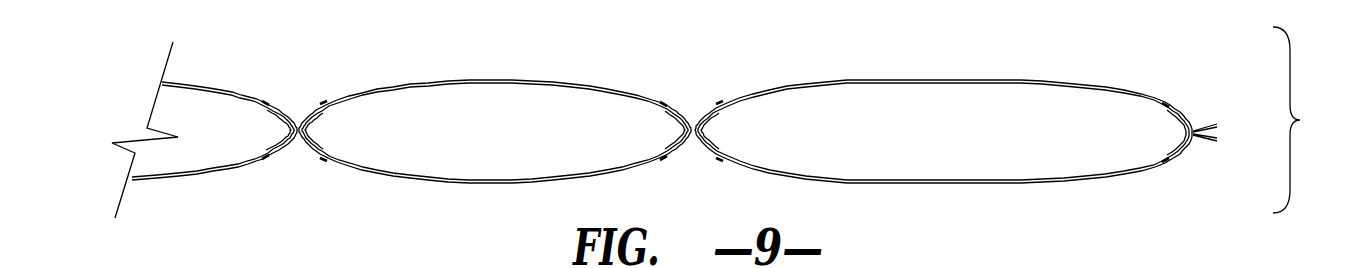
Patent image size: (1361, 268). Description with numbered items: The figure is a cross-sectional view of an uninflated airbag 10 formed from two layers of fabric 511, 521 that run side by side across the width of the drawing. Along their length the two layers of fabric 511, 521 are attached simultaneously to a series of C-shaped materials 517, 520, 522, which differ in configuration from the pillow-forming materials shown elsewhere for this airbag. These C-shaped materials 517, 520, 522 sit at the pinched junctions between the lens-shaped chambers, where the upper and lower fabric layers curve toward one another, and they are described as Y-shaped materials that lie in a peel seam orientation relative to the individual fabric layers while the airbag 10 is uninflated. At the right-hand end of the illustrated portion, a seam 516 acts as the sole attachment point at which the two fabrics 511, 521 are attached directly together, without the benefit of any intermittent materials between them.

The airbag 10 is at (727, 129).
The layer of fabric 511 is at (478, 78).
The layer of fabric 521 is at (440, 183).
The C-shaped material 520 is at (272, 108).
The C-shaped material 522 is at (317, 110).
The C-shaped material 517 is at (1172, 117).
The seam 516 is at (1197, 125).